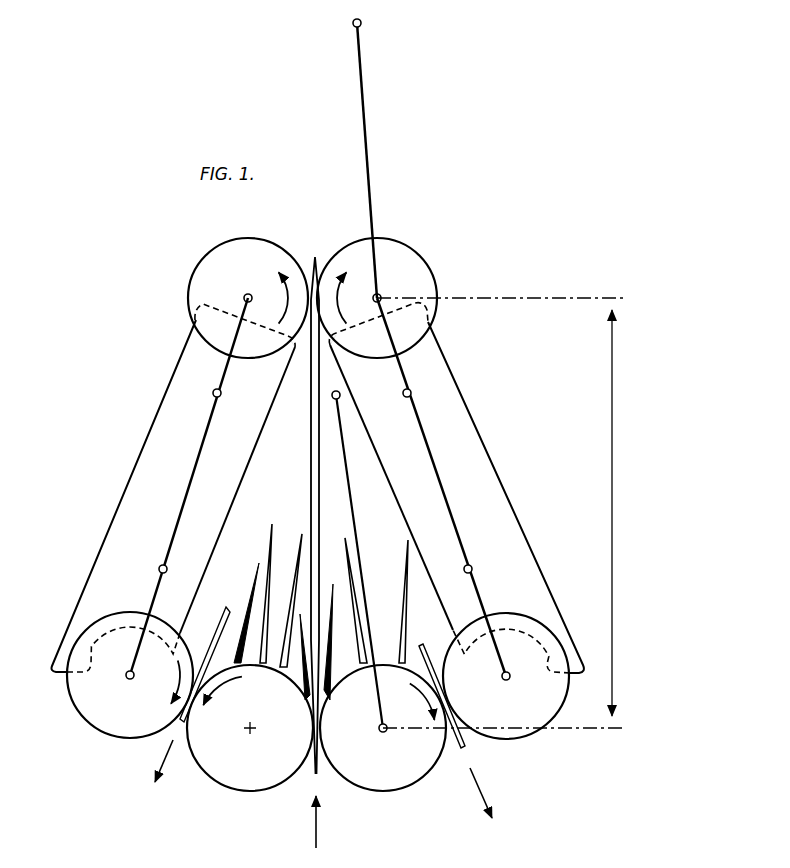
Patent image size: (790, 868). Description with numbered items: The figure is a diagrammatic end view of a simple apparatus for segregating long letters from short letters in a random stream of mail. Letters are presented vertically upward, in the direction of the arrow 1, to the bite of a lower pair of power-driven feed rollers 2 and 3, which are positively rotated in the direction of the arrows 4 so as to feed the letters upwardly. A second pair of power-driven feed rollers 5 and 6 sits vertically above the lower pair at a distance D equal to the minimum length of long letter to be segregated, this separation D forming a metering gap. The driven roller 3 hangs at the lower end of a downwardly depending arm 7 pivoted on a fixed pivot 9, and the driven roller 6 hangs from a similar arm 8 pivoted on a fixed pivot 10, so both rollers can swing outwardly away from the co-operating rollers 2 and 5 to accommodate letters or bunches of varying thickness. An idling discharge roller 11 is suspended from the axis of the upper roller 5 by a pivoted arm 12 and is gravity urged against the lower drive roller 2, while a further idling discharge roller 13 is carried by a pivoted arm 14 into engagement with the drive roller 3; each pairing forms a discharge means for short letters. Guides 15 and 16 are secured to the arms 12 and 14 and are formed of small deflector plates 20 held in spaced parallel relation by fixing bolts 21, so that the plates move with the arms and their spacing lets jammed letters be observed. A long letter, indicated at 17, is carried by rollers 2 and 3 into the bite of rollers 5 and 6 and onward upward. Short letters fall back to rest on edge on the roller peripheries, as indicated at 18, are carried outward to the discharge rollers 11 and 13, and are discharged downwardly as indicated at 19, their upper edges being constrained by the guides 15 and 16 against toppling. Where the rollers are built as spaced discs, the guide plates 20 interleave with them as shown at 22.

The arrow 1 is at (314, 817).
The power-driven feed roller 2 is at (214, 781).
The power-driven feed roller 3 is at (411, 778).
The arrow 4 is at (226, 678).
The power-driven feed roller 5 is at (220, 238).
The power-driven feed roller 6 is at (410, 244).
The downwardly depending arm 7 is at (355, 518).
The downwardly depending arm 8 is at (366, 128).
The fixed pivot 9 is at (341, 393).
The fixed pivot 10 is at (363, 23).
The idling discharge roller 11 is at (74, 705).
The pivoted arm 12 is at (200, 448).
The idling discharge roller 13 is at (558, 700).
The pivoted arm 14 is at (446, 500).
The guide 15 is at (82, 590).
The guide 16 is at (521, 521).
The long letter 17 is at (310, 450).
The short letters 18 is at (300, 547).
The discharge direction 19 is at (170, 740).
The deflector plates 20 is at (240, 478).
The fixing bolts 21 is at (222, 393).
The interleaving of guide plates with rollers 22 is at (92, 646).
The distance D is at (503, 513).